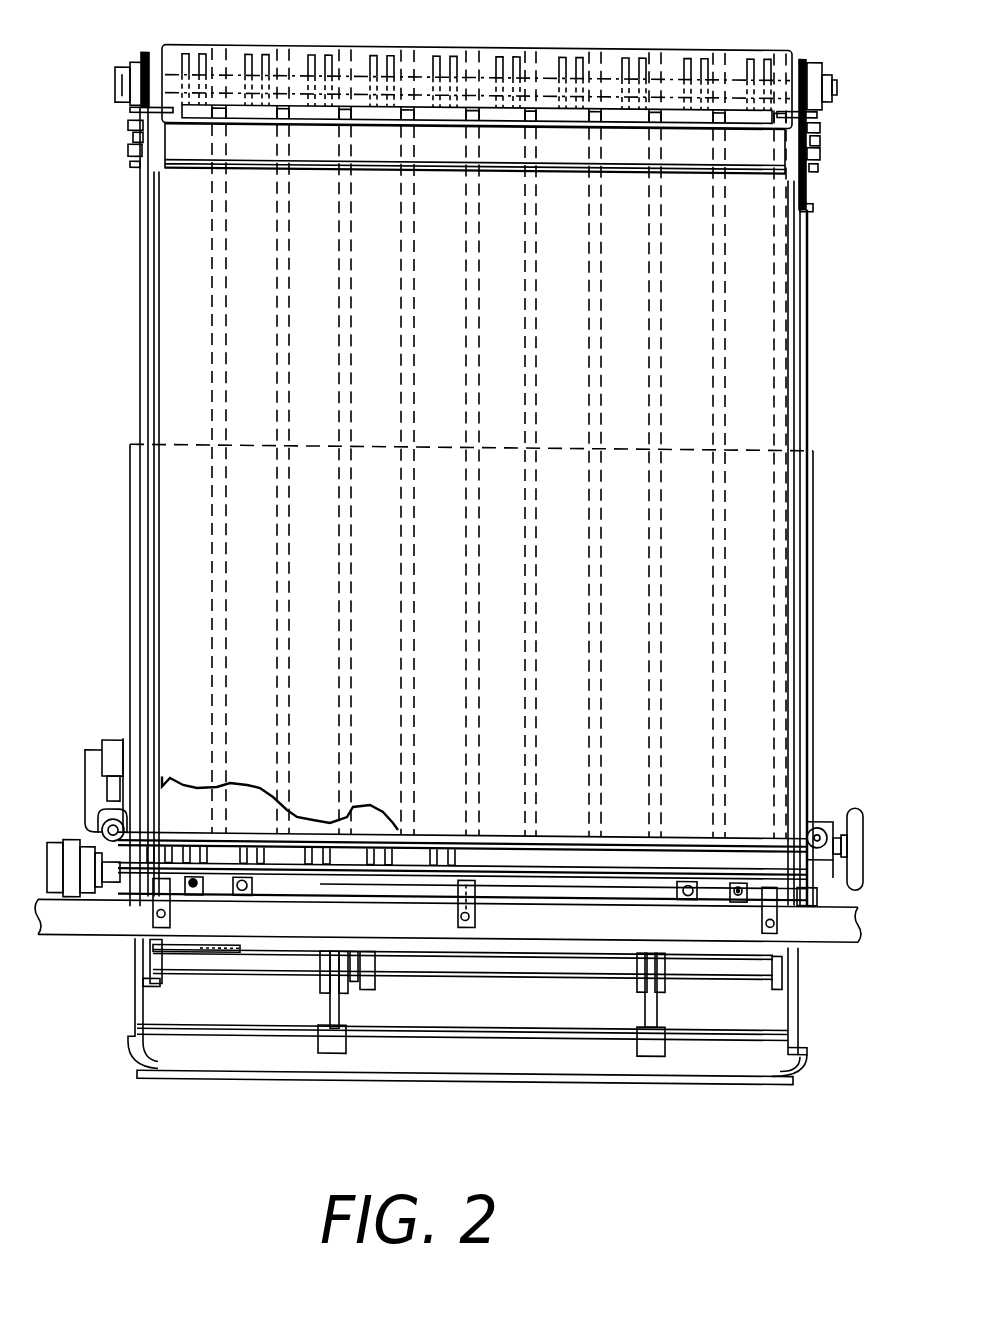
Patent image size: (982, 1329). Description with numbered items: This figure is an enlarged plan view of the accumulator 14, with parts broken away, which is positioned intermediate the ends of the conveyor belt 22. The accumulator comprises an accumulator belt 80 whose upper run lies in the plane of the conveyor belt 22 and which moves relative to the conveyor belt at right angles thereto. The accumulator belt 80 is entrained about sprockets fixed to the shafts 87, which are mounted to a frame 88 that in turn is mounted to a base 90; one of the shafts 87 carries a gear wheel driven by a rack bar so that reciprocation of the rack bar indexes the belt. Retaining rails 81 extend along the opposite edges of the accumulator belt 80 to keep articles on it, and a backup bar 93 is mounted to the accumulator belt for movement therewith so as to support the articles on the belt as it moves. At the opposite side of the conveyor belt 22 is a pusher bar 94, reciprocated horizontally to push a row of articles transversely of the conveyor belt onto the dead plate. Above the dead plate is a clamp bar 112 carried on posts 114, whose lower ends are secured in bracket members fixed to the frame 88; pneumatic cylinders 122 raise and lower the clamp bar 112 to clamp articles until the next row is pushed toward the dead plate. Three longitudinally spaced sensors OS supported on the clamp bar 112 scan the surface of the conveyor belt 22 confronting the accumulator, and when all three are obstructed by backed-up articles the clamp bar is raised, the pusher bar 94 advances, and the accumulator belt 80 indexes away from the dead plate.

The accumulator 14 is at (474, 479).
The conveyor belt 22 is at (448, 920).
The accumulator belt 80 is at (471, 443).
The retaining rails 81 is at (150, 361).
The shafts 87 is at (838, 82).
The frame 88 is at (133, 989).
The base 90 is at (813, 614).
The backup bar 93 is at (170, 145).
The pusher bar 94 is at (480, 943).
The clamp bar 112 is at (607, 894).
The posts 114 is at (822, 824).
The pneumatic cylinders 122 is at (248, 893).
The sensors OS is at (152, 916).